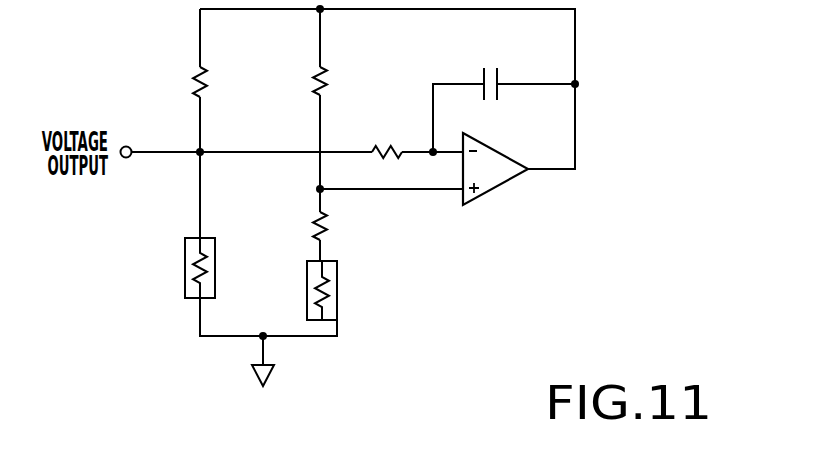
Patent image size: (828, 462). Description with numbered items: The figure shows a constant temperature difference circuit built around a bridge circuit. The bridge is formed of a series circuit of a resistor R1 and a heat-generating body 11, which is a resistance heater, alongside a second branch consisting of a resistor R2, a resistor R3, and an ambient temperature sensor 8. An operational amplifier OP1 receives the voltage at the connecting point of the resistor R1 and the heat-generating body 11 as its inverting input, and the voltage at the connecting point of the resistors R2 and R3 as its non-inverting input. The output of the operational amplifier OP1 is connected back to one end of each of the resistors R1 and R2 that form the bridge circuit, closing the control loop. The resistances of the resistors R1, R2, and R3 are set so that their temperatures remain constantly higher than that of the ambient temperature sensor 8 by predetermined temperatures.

The heat-generating body 11 is at (185, 272).
The ambient temperature sensor 8 is at (337, 289).
The resistor R1 is at (203, 84).
The resistor R2 is at (335, 83).
The resistor R3 is at (336, 229).
The operational amplifier OP1 is at (495, 193).